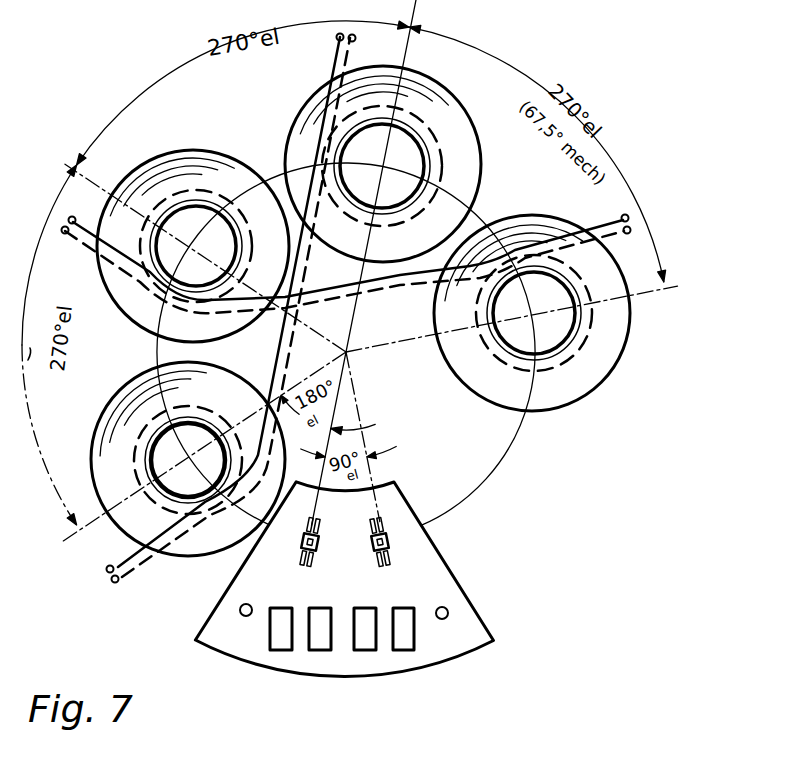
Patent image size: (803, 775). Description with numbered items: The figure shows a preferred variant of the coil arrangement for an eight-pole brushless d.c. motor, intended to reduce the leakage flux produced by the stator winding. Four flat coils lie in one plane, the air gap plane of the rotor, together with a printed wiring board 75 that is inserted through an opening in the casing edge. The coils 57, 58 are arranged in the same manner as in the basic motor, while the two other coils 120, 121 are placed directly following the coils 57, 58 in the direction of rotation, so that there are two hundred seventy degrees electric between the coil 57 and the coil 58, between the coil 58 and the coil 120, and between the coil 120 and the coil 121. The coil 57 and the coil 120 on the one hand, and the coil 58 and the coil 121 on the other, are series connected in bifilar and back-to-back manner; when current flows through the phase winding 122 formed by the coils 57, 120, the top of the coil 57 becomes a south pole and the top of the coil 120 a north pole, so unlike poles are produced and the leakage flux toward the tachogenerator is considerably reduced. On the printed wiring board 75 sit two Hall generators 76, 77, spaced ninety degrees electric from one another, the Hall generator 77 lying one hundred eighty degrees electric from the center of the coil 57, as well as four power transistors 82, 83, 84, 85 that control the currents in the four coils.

The coil 57 is at (133, 407).
The coil 58 is at (174, 152).
The coil 120 is at (456, 163).
The coil 121 is at (585, 368).
The phase winding 122 is at (276, 302).
The printed wiring board 75 is at (447, 580).
The Hall generator 76 is at (315, 552).
The Hall generator 77 is at (392, 548).
The power transistor 82 is at (280, 642).
The power transistor 83 is at (317, 644).
The power transistor 84 is at (371, 644).
The power transistor 85 is at (407, 644).